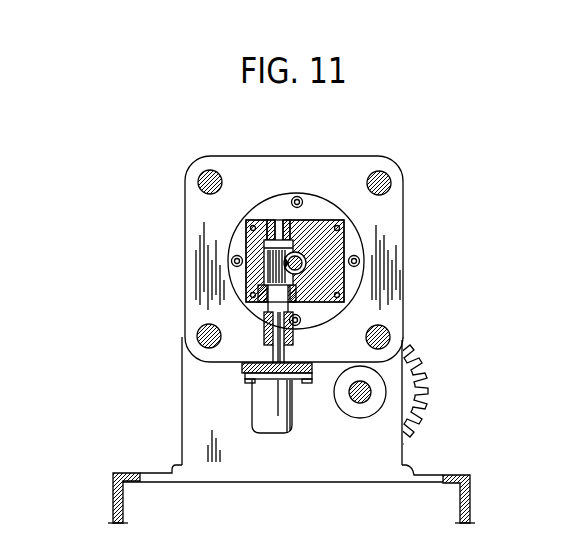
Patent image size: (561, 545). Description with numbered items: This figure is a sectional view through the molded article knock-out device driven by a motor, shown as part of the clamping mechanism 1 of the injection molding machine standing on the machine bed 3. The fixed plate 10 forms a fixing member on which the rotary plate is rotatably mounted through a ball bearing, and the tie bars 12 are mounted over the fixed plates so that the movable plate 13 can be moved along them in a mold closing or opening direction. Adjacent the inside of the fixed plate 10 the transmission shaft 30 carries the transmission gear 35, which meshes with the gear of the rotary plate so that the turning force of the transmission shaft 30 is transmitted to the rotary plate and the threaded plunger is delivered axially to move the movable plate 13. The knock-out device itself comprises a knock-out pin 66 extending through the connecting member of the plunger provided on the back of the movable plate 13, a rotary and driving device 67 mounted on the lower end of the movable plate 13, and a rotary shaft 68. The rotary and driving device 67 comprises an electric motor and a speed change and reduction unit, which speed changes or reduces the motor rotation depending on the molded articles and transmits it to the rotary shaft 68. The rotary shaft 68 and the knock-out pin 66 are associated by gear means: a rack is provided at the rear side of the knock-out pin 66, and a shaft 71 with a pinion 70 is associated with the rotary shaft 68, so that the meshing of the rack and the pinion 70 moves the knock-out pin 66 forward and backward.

The clamping mechanism 1 is at (172, 168).
The machine bed 3 is at (113, 497).
The fixed plate 10 is at (192, 427).
The tie bars 12 is at (390, 183).
The movable plate 13 is at (238, 172).
The transmission shaft 30 is at (362, 398).
The transmission gear 35 is at (410, 391).
The knock-out pin 66 is at (298, 268).
The rotary and driving device 67 is at (263, 402).
The rotary shaft 68 is at (278, 353).
The pinion 70 is at (266, 268).
The shaft 71 is at (266, 313).